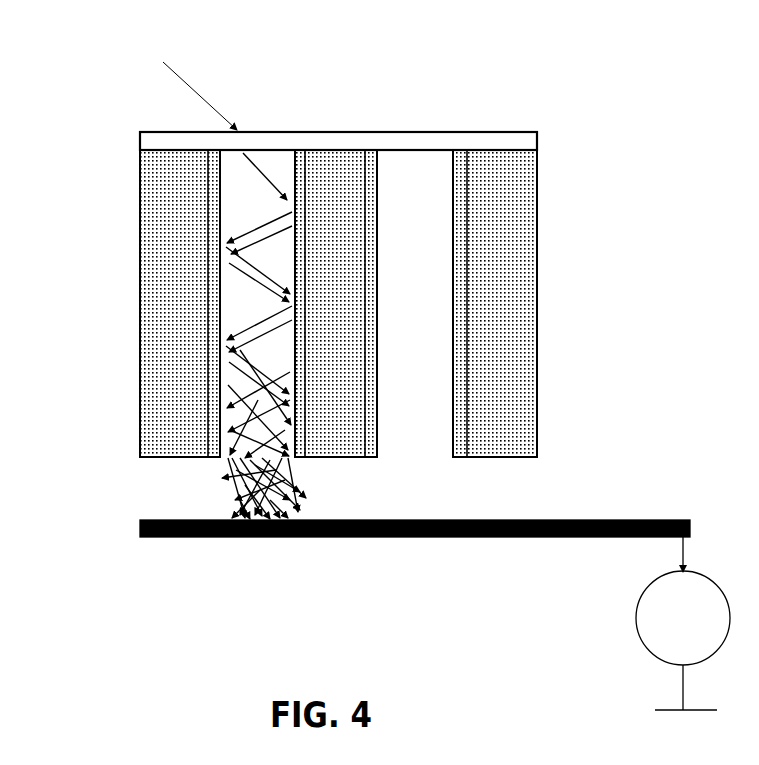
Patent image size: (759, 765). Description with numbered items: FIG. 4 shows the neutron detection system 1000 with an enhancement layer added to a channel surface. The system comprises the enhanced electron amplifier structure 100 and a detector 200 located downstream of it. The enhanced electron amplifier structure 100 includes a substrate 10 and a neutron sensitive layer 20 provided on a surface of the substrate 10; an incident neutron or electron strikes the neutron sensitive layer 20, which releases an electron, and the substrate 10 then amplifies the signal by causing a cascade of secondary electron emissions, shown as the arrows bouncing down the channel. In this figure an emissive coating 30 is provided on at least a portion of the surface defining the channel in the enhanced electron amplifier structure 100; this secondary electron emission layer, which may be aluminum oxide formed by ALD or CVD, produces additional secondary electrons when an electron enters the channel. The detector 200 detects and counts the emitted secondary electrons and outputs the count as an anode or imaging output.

The neutron detection system 1000 is at (556, 84).
The enhanced electron amplifier structure 100 is at (540, 135).
The neutron sensitive layer 20 is at (140, 140).
The substrate 10 is at (130, 152).
The emissive coating 30 is at (542, 415).
The detector 200 is at (140, 529).